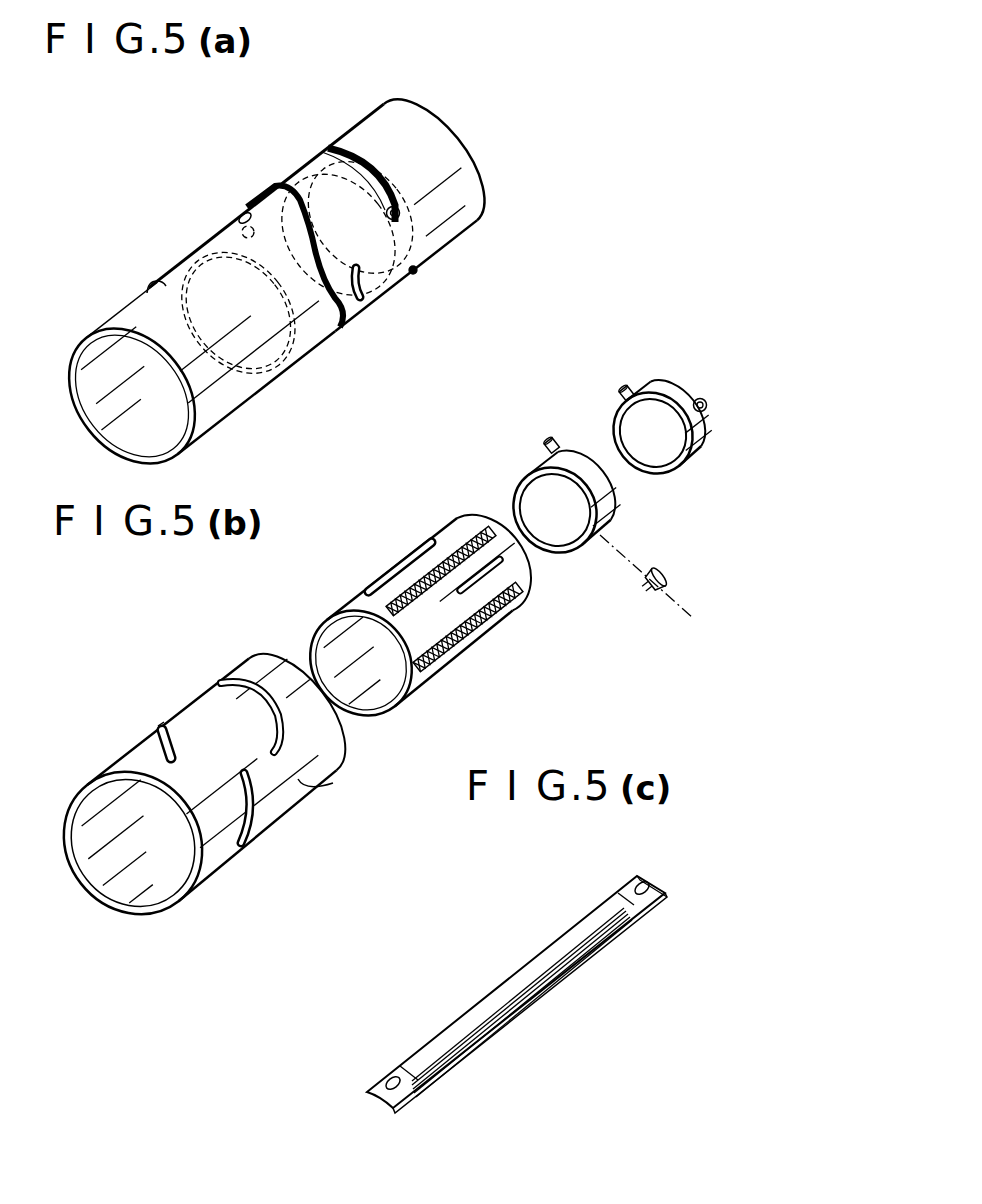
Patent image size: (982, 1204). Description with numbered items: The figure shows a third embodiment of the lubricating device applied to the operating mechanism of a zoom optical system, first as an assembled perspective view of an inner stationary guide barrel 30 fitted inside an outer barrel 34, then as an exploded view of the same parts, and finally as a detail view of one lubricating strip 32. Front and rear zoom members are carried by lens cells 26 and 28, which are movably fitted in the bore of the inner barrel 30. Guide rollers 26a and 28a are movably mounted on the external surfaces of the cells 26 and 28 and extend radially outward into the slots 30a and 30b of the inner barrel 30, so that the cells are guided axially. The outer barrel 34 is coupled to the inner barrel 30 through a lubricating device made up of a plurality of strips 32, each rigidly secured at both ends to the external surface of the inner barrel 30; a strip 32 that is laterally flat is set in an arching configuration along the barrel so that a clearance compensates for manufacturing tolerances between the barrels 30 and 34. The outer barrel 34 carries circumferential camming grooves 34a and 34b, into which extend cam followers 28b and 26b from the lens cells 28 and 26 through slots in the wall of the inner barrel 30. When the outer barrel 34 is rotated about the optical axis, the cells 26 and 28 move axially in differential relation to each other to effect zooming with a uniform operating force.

In FIG. 5a, the lens cell 26 is at (238, 272).
In FIG. 5b, the lens cell 26 is at (594, 515).
In FIG. 5a, the guide roller 26a is at (244, 213).
In FIG. 5b, the guide roller 26a is at (550, 440).
In FIG. 5b, the cam follower 26b is at (647, 595).
In FIG. 5a, the lens cell 28 is at (375, 219).
In FIG. 5b, the lens cell 28 is at (656, 411).
In FIG. 5a, the guide roller 28a is at (398, 218).
In FIG. 5b, the guide roller 28a is at (697, 413).
In FIG. 5b, the cam follower 28b is at (632, 392).
In FIG. 5a, the inner stationary guide barrel 30 is at (191, 349).
In FIG. 5b, the inner stationary guide barrel 30 is at (420, 616).
In FIG. 5a, the slot 30a is at (157, 283).
In FIG. 5b, the slot 30a is at (387, 572).
In FIG. 5b, the slot 30b is at (479, 582).
In FIG. 5b, the strip 32 is at (487, 532).
In FIG. 5c, the strip 32 is at (527, 973).
In FIG. 5a, the outer barrel 34 is at (327, 243).
In FIG. 5b, the outer barrel 34 is at (202, 776).
In FIG. 5a, the circumferential camming groove 34a is at (334, 145).
In FIG. 5b, the circumferential camming groove 34a is at (235, 683).
In FIG. 5a, the circumferential camming groove 34b is at (362, 305).
In FIG. 5b, the circumferential camming groove 34b is at (245, 837).